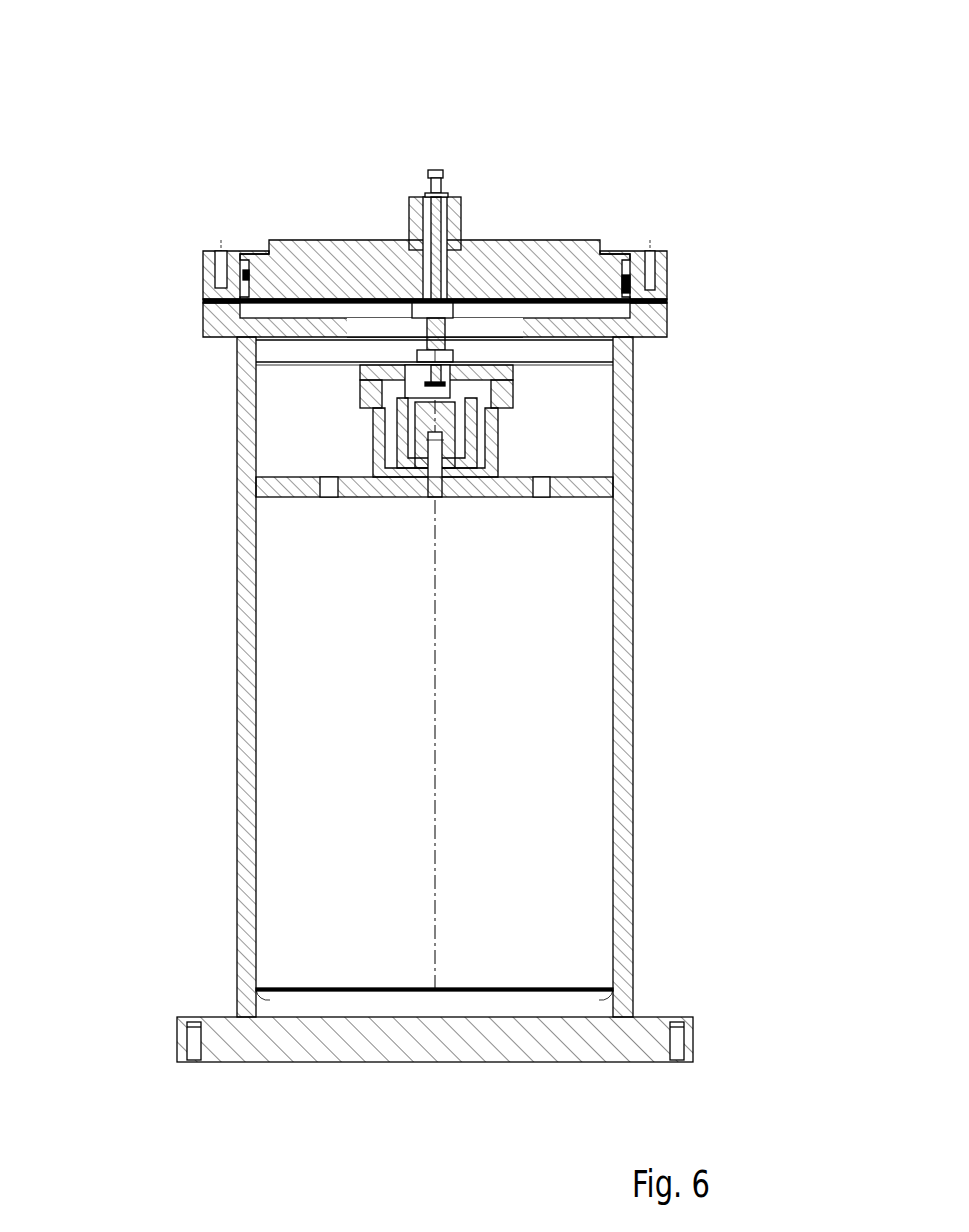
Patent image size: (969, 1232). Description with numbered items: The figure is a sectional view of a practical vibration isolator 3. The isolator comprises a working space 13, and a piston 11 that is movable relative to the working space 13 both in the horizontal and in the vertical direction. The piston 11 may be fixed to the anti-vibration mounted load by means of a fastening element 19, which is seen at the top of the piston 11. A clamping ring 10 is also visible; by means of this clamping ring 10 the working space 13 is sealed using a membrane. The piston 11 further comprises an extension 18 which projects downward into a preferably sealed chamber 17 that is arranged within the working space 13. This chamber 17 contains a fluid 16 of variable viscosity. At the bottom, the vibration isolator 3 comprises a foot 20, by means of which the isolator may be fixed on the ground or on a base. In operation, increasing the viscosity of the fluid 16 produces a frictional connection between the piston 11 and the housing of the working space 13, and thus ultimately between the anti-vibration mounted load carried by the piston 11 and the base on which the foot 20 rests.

The vibration isolator 3 is at (166, 630).
The clamping ring 10 is at (217, 253).
The piston 11 is at (512, 273).
The working space 13 is at (550, 438).
The fluid 16 is at (480, 447).
The chamber 17 is at (372, 445).
The extension 18 is at (465, 372).
The fastening element 19 is at (425, 172).
The foot 20 is at (552, 1020).